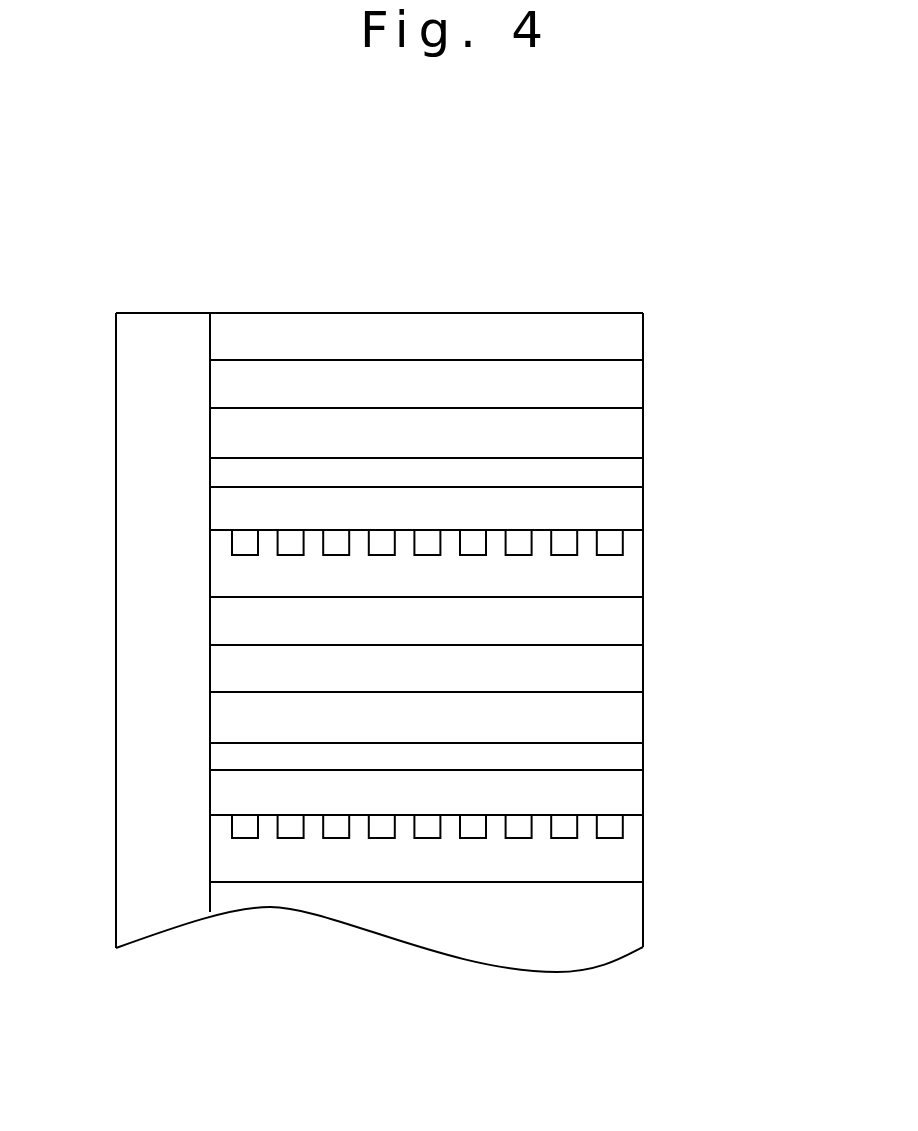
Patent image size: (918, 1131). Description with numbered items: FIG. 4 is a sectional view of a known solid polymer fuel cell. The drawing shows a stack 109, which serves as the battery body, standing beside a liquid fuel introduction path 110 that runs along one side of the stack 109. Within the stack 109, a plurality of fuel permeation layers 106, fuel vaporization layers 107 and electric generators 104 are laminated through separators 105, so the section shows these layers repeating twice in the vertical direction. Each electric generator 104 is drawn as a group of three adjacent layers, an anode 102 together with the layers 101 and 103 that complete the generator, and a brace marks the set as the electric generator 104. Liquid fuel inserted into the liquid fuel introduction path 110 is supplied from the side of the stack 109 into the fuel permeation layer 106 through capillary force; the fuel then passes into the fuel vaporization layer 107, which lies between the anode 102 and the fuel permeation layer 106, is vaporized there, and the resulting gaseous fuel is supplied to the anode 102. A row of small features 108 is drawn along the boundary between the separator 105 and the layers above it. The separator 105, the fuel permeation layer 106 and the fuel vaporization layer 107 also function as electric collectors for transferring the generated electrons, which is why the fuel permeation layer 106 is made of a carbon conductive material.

The active layer 101 is at (632, 470).
The anode 102 is at (632, 438).
The lower cladding layer 103 is at (632, 507).
The electric generator 104 is at (736, 407).
The separator 105 is at (632, 586).
The fuel permeation layer 106 is at (632, 337).
The fuel vaporization layer 107 is at (632, 383).
The nanostructure / quantum dots 108 is at (610, 541).
The stack 109 is at (793, 572).
The liquid fuel introduction path 110 is at (135, 608).